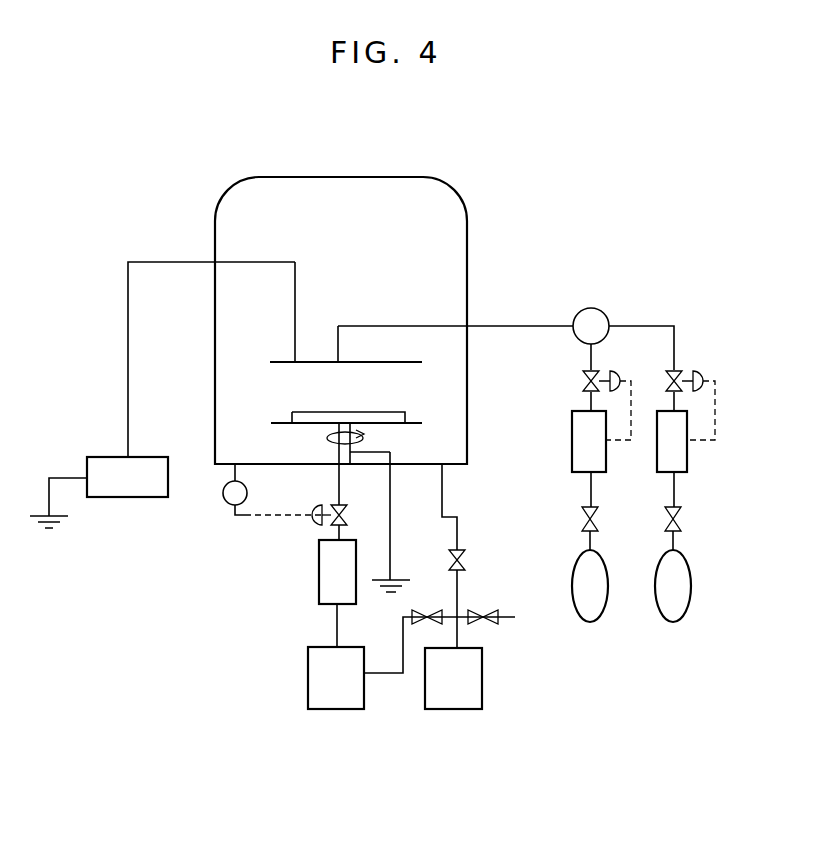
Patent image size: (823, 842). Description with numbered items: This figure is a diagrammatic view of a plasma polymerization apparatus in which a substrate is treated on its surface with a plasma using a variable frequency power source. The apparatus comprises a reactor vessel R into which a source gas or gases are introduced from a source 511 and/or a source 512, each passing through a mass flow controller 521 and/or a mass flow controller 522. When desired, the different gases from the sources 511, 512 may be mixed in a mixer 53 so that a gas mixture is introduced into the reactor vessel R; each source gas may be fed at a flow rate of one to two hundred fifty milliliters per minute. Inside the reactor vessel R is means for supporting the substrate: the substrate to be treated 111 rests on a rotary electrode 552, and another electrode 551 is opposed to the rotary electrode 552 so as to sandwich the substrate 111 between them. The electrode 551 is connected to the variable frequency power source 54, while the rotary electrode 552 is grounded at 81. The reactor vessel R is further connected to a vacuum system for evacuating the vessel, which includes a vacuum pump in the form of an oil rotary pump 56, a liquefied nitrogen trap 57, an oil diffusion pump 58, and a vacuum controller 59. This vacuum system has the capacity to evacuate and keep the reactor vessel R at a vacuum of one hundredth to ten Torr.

The reactor vessel R is at (458, 194).
The electrode 551 is at (387, 350).
The rotary electrode 552 is at (279, 421).
The substrate 111 is at (397, 414).
The variable frequency power source 54 is at (113, 490).
The vacuum controller 59 is at (240, 528).
The liquefied nitrogen trap 57 is at (318, 595).
The oil diffusion pump 58 is at (308, 690).
The oil rotary pump 56 is at (462, 700).
The ground 81 is at (392, 578).
The mixer 53 is at (585, 312).
The mass flow controller 521 is at (570, 455).
The mass flow controller 522 is at (720, 425).
The source 511 is at (588, 605).
The source 512 is at (672, 605).